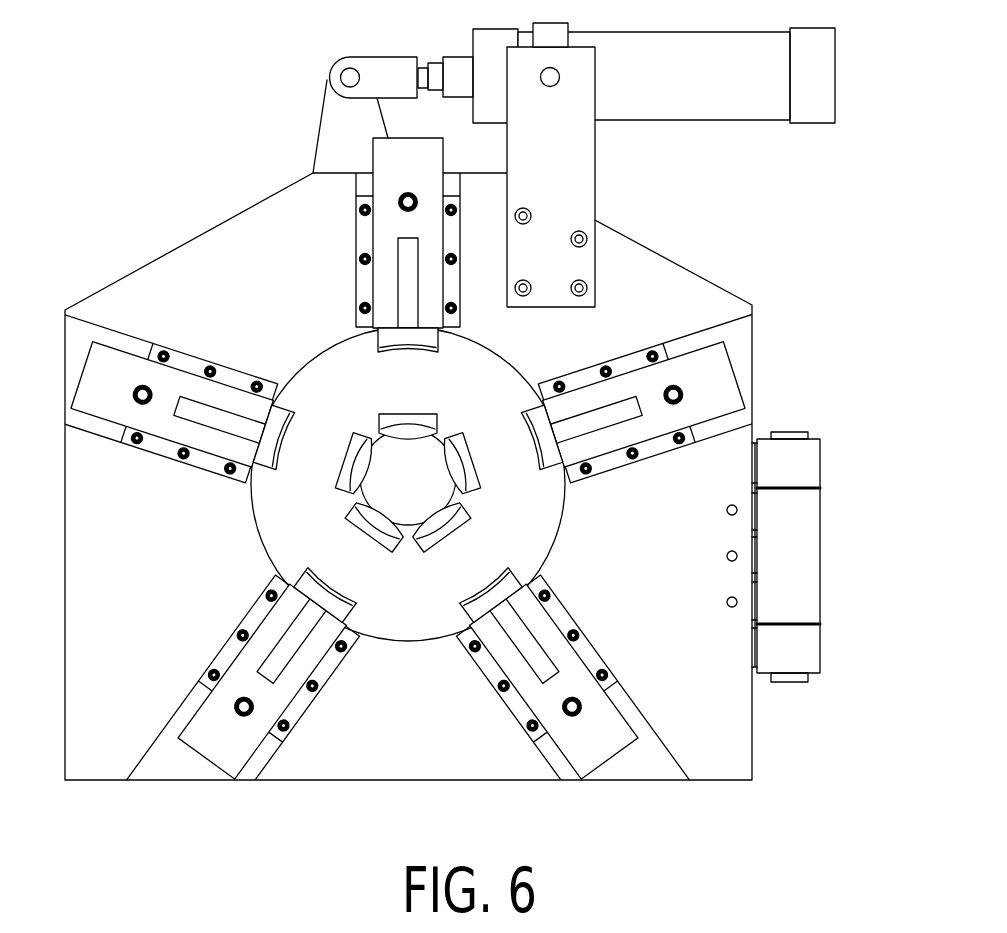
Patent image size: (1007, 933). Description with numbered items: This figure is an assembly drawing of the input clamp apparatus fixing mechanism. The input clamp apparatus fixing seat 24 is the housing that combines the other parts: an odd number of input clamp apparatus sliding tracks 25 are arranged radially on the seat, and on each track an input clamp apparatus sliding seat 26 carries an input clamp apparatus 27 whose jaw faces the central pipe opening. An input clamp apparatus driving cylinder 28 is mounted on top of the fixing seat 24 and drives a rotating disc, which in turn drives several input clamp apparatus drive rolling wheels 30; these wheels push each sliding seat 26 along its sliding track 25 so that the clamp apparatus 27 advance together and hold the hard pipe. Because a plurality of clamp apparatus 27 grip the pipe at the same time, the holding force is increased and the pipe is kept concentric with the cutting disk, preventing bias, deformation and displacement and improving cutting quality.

The input clamp apparatus fixing seat 24 is at (715, 673).
The input clamp apparatus sliding track 25 is at (650, 355).
The input clamp apparatus sliding seat 26 is at (717, 367).
The input clamp apparatus 27 is at (508, 578).
The input clamp apparatus driving cylinder 28 is at (823, 92).
The input clamp apparatus drive rolling wheel 30 is at (682, 396).